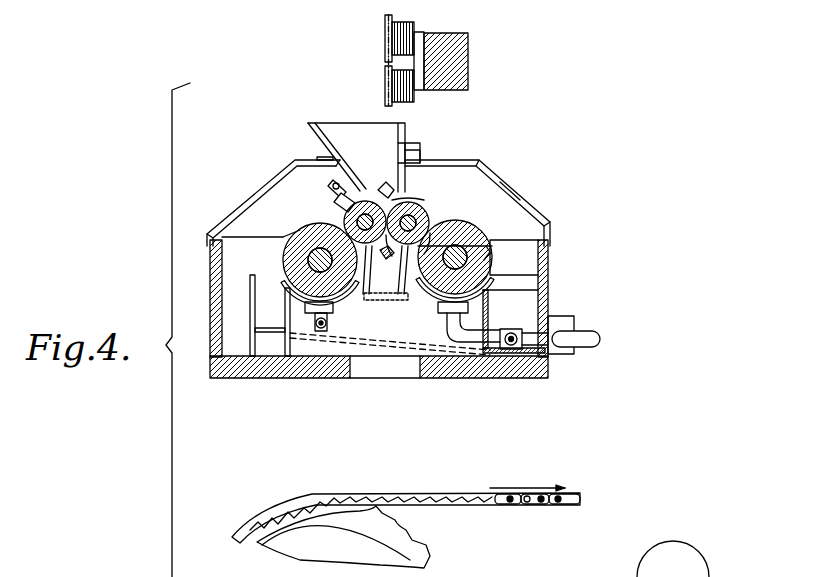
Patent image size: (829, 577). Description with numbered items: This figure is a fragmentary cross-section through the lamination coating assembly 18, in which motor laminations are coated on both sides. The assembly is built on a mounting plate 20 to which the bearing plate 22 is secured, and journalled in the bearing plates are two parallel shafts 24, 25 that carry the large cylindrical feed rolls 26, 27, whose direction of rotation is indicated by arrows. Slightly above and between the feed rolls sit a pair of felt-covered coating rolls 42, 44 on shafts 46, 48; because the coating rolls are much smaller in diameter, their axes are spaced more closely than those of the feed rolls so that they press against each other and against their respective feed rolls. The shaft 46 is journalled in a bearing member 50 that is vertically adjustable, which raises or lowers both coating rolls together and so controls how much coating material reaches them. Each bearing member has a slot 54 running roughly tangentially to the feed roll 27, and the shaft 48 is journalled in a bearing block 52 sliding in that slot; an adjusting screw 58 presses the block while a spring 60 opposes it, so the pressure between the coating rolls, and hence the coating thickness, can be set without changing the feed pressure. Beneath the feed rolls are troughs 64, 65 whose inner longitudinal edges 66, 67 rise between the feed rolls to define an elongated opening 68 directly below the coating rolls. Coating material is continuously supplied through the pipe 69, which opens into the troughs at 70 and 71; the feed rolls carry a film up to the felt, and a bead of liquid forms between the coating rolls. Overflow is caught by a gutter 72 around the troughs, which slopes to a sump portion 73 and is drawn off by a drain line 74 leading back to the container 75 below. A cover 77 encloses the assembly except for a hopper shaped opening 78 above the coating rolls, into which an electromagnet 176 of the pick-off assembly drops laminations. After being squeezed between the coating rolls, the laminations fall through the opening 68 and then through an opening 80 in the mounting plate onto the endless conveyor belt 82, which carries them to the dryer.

The housing 18 is at (548, 284).
The mounting plate 20 is at (270, 380).
The bearing plate 22 is at (504, 219).
The shaft 24 is at (480, 240).
The shaft 25 is at (284, 258).
The feed roll 26 is at (466, 222).
The feed roll 27 is at (288, 226).
The coating roll 42 is at (424, 205).
The coating roll 44 is at (383, 185).
The shaft 46 is at (426, 218).
The shaft 48 is at (343, 207).
The bearing member 50 is at (405, 163).
The bearing block 52 is at (400, 194).
The slot 54 is at (343, 224).
The adjusting screw 58 is at (333, 190).
The spring 60 is at (385, 258).
The trough 64 is at (486, 280).
The trough 65 is at (286, 272).
The inner longitudinal edge 66 is at (404, 282).
The inner longitudinal edge 67 is at (364, 284).
The elongated opening 68 is at (373, 282).
The pipe 69 is at (482, 330).
The pipe opening 70 is at (490, 306).
The pipe opening 71 is at (316, 314).
The gutter 72 is at (249, 298).
The sump portion 73 is at (522, 352).
The drain line 74 is at (598, 343).
The container 75 is at (706, 566).
The cover 77 is at (519, 196).
The hopper shaped opening 78 is at (355, 130).
The opening 80 is at (360, 380).
The endless conveyor belt 82 is at (443, 494).
The electromagnet 176 is at (384, 46).